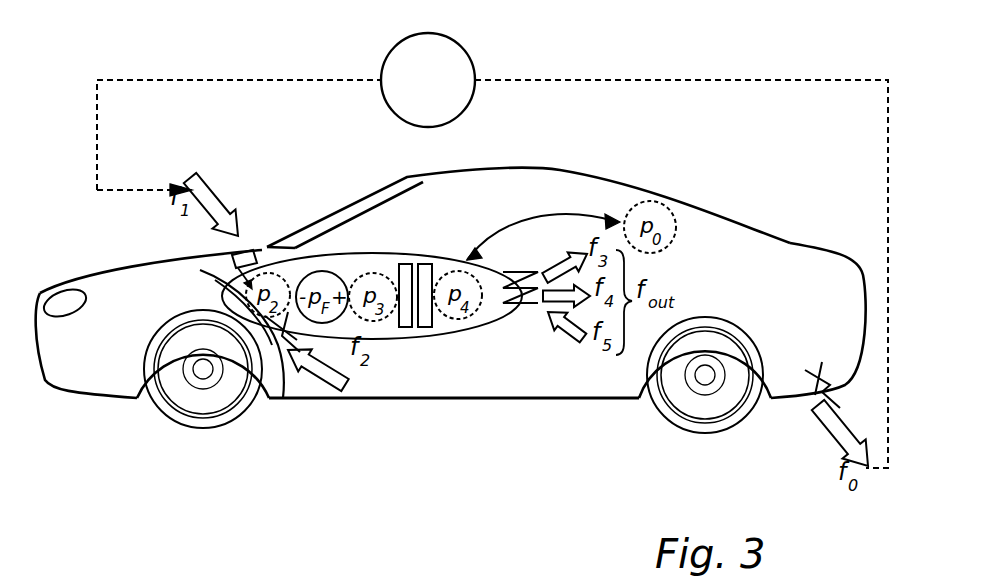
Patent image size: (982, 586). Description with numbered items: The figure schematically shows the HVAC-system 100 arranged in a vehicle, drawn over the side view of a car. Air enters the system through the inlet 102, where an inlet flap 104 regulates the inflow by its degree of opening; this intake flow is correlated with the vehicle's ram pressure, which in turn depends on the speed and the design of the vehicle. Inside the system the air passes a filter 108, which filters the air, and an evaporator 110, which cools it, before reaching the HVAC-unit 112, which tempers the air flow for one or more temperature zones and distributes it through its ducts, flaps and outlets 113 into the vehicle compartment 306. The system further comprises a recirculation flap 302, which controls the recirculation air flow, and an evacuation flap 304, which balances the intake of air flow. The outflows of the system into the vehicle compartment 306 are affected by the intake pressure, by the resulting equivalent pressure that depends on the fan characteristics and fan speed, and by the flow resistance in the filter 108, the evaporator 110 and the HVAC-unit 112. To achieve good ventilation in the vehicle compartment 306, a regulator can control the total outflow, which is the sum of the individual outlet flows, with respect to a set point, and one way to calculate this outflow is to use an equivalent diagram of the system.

The HVAC-system 100 is at (617, 48).
The inlet 102 is at (240, 262).
The inlet flap 104 is at (232, 284).
The filter 108 is at (405, 327).
The evaporator 110 is at (425, 327).
The HVAC-unit 112 is at (518, 325).
The outlets 113 is at (565, 330).
The recirculation flap 302 is at (272, 332).
The evacuation flap 304 is at (828, 385).
The vehicle compartment 306 is at (446, 226).